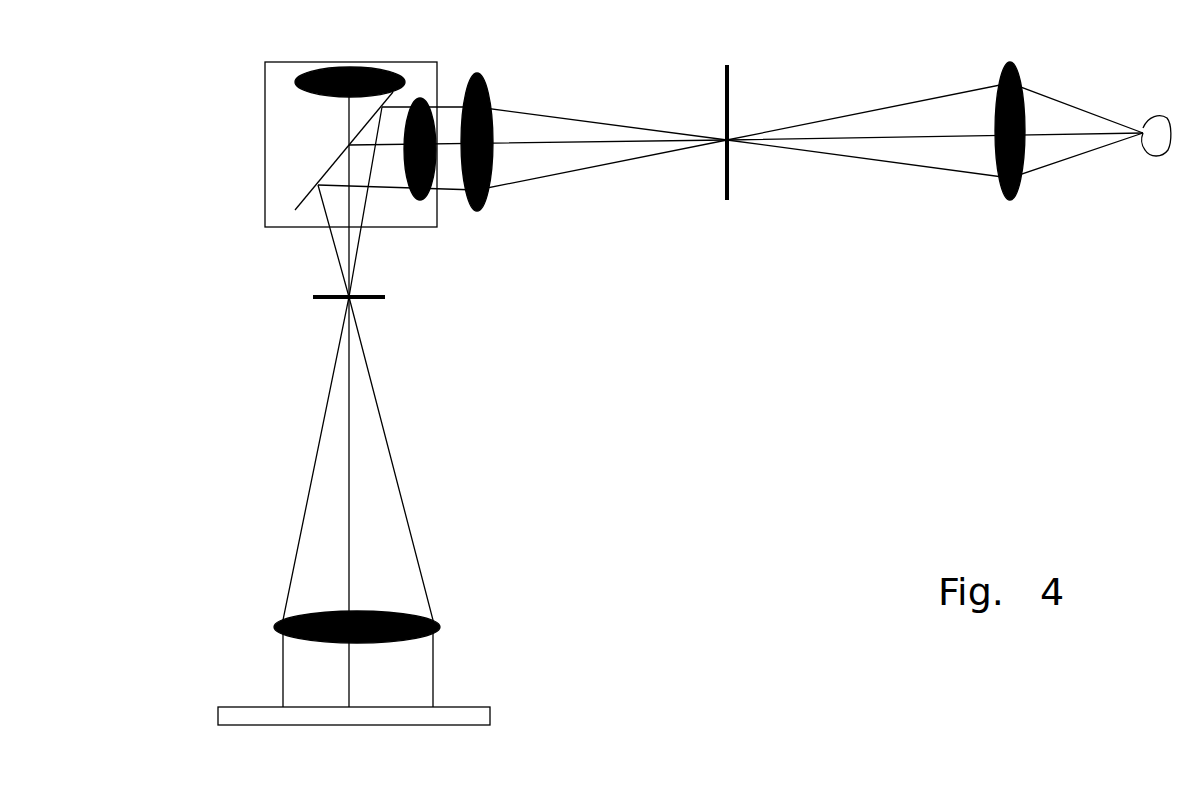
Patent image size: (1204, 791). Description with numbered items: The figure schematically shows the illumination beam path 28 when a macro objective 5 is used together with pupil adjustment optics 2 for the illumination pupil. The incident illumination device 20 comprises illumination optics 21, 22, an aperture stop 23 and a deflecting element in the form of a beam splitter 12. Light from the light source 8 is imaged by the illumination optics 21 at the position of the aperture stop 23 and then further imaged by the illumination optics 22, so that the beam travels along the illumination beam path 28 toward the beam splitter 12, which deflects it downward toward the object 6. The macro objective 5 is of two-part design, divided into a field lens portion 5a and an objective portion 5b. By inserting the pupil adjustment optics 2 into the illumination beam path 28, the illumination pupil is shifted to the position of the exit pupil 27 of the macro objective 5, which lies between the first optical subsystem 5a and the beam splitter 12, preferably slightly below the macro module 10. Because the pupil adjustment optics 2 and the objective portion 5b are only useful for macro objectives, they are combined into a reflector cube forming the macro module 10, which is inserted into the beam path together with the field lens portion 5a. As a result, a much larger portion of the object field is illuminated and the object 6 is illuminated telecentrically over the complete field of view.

The pupil adjustment optics 2 is at (430, 190).
The macro objective 5 is at (445, 530).
The field lens portion 5a is at (437, 625).
The objective portion 5b is at (377, 62).
The object 6 is at (477, 705).
The light source 8 is at (1153, 113).
The macro module 10 is at (268, 175).
The beam splitter 12 is at (327, 163).
The incident illumination device 20 is at (810, 238).
The illumination optics 21 is at (1013, 72).
The illumination optics 22 is at (480, 88).
The aperture stop 23 is at (730, 80).
The exit pupil 27 is at (373, 303).
The illumination beam path 28 is at (937, 155).